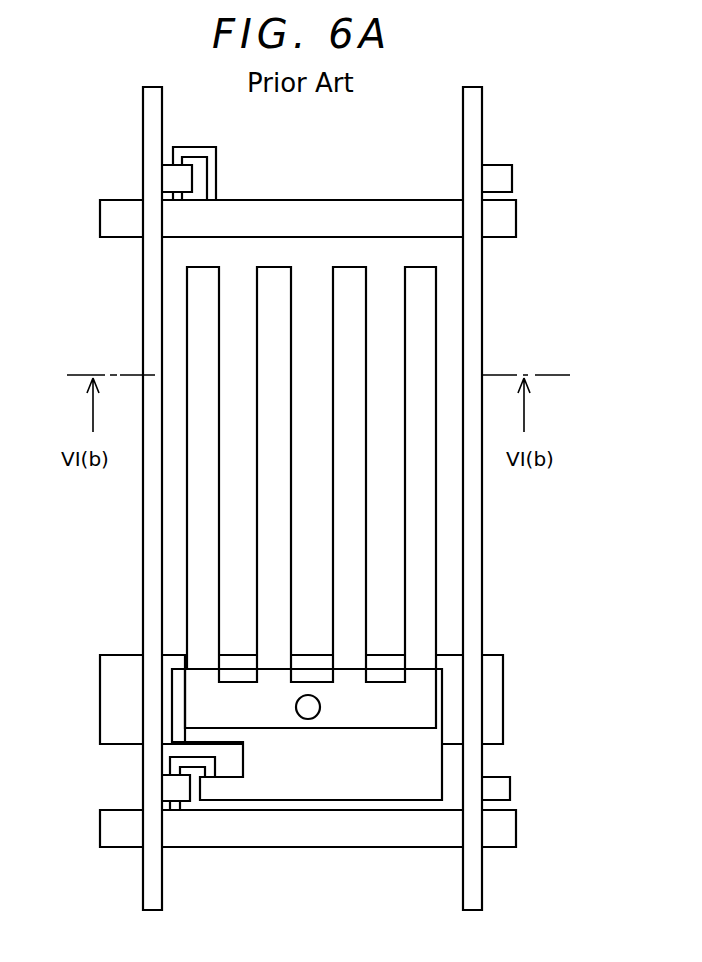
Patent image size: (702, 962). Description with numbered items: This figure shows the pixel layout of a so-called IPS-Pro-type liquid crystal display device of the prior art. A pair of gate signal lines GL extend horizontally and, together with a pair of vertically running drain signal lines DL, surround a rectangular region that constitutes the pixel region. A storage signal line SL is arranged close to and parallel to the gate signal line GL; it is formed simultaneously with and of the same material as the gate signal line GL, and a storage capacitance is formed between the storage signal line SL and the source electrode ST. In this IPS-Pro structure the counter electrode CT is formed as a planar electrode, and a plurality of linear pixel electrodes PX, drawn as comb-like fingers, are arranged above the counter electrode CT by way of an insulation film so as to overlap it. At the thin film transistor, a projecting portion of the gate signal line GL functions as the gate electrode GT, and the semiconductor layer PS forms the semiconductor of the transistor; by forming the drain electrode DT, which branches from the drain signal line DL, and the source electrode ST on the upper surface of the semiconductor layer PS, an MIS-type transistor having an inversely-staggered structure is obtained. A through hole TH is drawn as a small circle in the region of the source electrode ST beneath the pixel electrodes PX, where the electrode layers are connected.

The gate signal line GL is at (347, 212).
The drain signal line DL is at (153, 287).
The storage signal line SL is at (490, 683).
The gate electrode GT is at (183, 757).
The source electrode ST is at (311, 802).
The pixel electrode PX is at (358, 577).
The drain electrode DT is at (175, 788).
The through hole TH is at (321, 705).
The counter electrode CT is at (237, 505).
The semiconductor layer PS is at (203, 808).